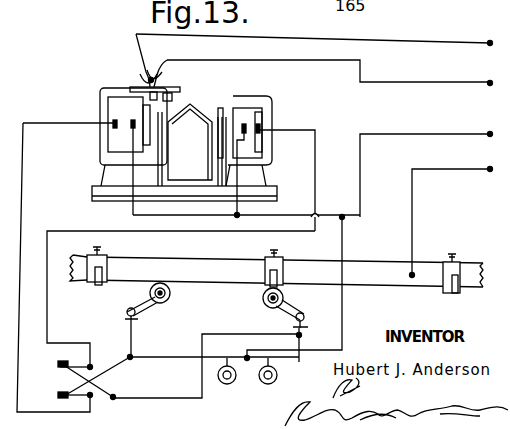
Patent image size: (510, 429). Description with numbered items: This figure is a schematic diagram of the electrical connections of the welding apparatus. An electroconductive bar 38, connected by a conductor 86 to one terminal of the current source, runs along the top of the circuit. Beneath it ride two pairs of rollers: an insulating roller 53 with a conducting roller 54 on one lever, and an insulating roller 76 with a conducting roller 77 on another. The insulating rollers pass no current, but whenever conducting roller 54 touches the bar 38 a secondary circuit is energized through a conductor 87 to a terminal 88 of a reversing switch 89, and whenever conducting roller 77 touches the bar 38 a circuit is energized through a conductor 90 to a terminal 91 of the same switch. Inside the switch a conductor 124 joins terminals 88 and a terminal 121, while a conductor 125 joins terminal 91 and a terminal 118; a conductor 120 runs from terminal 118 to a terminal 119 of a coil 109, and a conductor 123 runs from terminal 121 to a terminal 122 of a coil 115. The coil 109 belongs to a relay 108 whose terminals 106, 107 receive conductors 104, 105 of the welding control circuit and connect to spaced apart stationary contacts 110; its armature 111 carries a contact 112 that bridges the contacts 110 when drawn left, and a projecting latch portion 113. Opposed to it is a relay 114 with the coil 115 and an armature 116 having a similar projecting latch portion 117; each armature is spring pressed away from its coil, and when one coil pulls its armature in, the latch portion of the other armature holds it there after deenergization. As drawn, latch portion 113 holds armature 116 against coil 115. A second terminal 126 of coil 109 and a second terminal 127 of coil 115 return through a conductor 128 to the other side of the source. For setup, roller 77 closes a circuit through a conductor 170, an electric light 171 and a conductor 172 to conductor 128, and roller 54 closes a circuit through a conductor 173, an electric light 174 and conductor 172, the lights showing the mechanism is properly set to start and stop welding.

The bar 38 is at (383, 271).
The insulating roller 53 is at (262, 301).
The conducting roller 54 is at (283, 294).
The insulating roller 76 is at (170, 292).
The conducting roller 77 is at (164, 302).
The conductor 86 is at (412, 196).
The conductor 87 is at (237, 334).
The terminal 88 is at (113, 397).
The reversing switch 89 is at (100, 403).
The conductor 90 is at (132, 342).
The terminal 91 is at (203, 348).
The conductor 104 is at (418, 42).
The conductor 105 is at (415, 86).
The terminal 106 is at (148, 78).
The terminal 107 is at (153, 74).
The relay 108 is at (100, 97).
The coil 109 is at (115, 108).
The stationary contacts 110 is at (150, 86).
The armature 111 is at (162, 160).
The contact 112 is at (166, 90).
The projecting latch portion 113 is at (190, 142).
The relay 114 is at (273, 100).
The coil 115 is at (273, 115).
The armature 116 is at (210, 160).
The projecting latch portion 117 is at (212, 118).
The terminal 118 is at (60, 398).
The terminal 119 is at (113, 130).
The conductor 120 is at (22, 186).
The terminal 121 is at (58, 362).
The terminal 122 is at (262, 131).
The conductor 123 is at (68, 230).
The conductor 124 is at (104, 381).
The conductor 125 is at (107, 370).
The second terminal 126 is at (128, 132).
The second terminal 127 is at (267, 154).
The conductor 128 is at (360, 168).
The conductor 170 is at (202, 356).
The electric light 171 is at (230, 385).
The conductor 172 is at (343, 305).
The conductor 173 is at (298, 365).
The electric light 174 is at (273, 385).